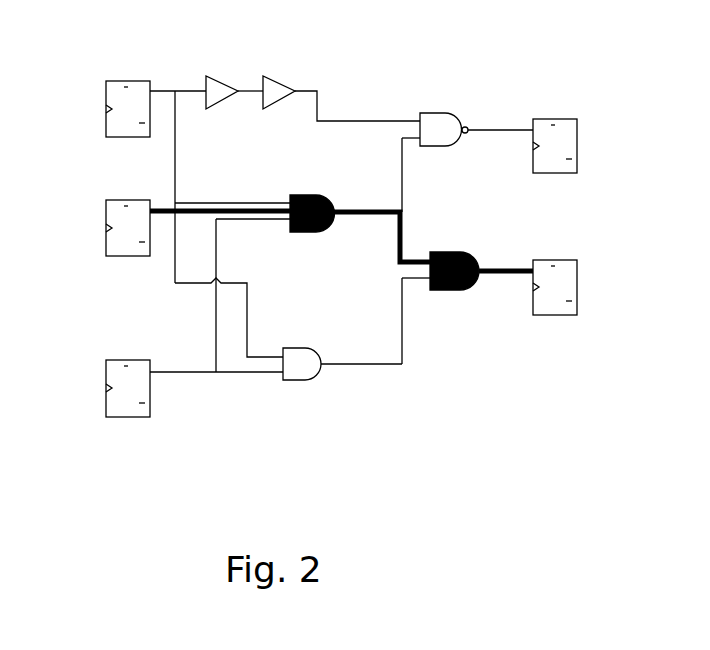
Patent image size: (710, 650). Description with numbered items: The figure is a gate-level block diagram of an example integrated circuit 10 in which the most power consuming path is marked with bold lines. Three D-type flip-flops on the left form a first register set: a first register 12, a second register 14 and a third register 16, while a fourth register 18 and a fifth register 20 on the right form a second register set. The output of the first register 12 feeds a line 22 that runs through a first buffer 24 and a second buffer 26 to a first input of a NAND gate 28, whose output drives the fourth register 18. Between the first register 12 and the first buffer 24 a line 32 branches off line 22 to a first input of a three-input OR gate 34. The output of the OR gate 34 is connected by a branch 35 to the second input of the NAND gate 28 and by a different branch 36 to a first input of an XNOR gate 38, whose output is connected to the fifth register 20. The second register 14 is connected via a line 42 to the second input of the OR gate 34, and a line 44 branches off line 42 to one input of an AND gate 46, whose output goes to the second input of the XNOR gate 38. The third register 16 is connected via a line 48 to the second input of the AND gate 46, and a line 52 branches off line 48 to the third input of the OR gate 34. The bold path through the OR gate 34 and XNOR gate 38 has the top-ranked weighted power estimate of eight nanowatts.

The integrated circuit 10 is at (78, 72).
The first register 12 is at (106, 112).
The second register 14 is at (106, 226).
The third register 16 is at (106, 386).
The fourth register 18 is at (577, 150).
The fifth register 20 is at (568, 288).
The line 22 is at (172, 91).
The first buffer 24 is at (228, 82).
The second buffer 26 is at (288, 82).
The logic gate 28 is at (434, 113).
The line 32 is at (182, 162).
The logic gate 34 is at (308, 195).
The branch 35 is at (404, 176).
The branch 36 is at (406, 240).
The logic gate 38 is at (452, 290).
The line 42 is at (156, 208).
The line 44 is at (172, 262).
The logic gate 46 is at (302, 380).
The line 48 is at (176, 372).
The line 52 is at (216, 314).